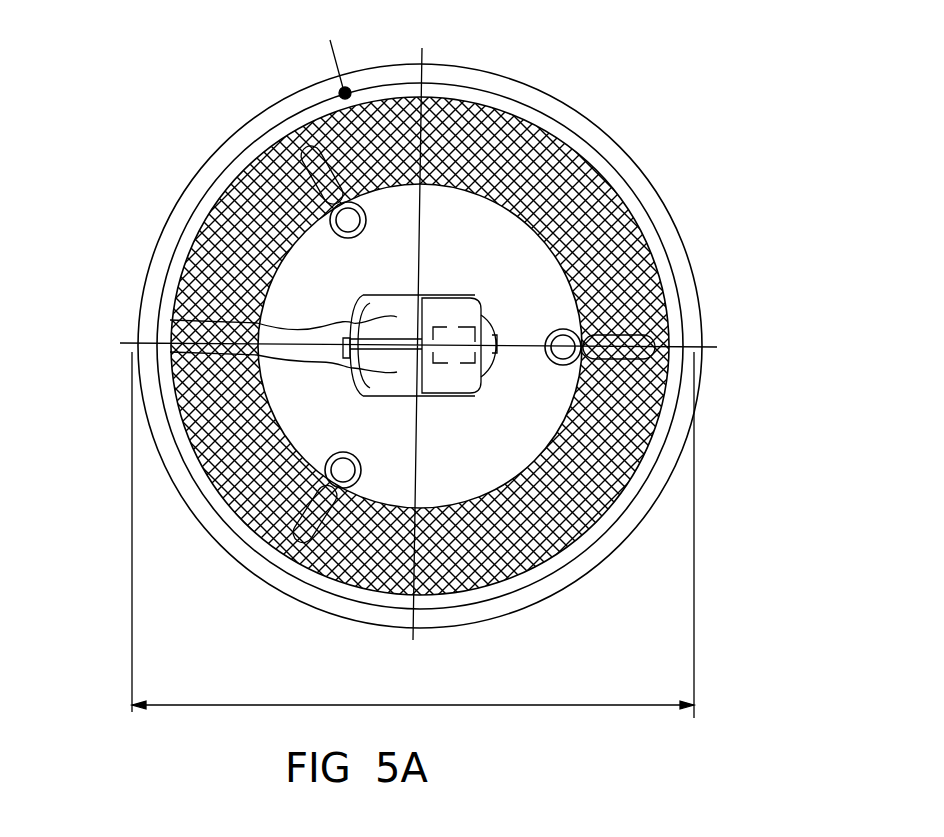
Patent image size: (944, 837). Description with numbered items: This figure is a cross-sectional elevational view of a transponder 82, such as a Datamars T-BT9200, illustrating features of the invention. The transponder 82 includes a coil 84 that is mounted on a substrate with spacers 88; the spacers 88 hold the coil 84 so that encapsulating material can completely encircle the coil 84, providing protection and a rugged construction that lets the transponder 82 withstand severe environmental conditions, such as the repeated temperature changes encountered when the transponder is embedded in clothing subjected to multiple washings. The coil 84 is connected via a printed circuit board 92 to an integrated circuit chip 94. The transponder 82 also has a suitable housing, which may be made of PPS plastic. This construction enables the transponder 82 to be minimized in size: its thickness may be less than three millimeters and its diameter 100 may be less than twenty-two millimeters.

The transponder 82 is at (152, 281).
The coil 84 is at (650, 270).
The spacers 88 is at (347, 207).
The printed circuit board 92 is at (412, 297).
The integrated circuit chip 94 is at (445, 363).
The diameter 100 is at (562, 706).